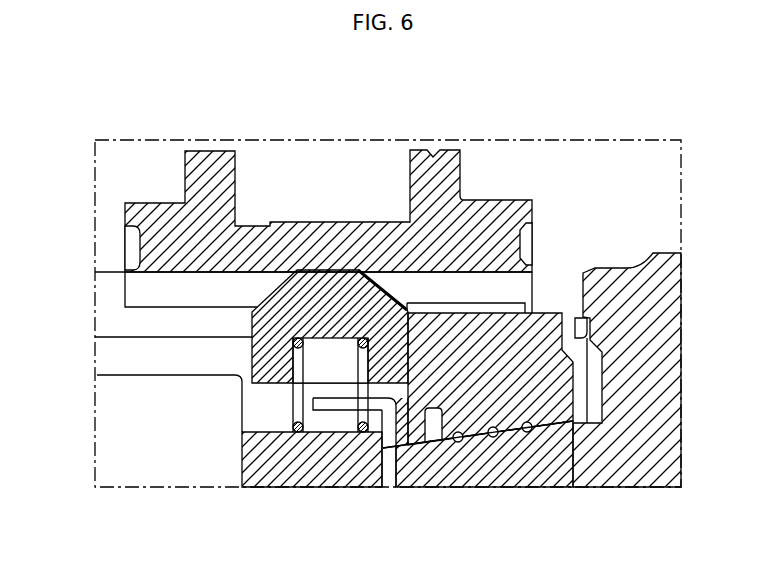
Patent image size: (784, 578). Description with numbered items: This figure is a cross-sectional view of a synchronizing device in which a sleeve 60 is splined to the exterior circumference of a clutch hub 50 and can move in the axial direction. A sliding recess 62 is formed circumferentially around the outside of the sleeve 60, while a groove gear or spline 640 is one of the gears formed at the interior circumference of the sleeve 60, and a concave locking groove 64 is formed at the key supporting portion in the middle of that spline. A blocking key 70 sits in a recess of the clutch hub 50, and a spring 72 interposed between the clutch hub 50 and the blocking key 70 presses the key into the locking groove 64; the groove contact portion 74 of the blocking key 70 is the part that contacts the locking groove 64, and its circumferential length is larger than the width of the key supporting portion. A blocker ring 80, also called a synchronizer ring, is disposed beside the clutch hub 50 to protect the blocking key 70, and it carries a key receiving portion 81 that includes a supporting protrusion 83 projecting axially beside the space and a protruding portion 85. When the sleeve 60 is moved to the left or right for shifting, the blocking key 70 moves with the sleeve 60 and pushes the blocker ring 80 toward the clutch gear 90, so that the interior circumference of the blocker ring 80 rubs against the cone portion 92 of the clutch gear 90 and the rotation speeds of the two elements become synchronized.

The clutch hub 50 is at (112, 353).
The sleeve 60 is at (478, 217).
The sliding recess 62 is at (328, 201).
The locking groove 64 is at (324, 274).
The groove gear or spline 640 is at (498, 290).
The blocking key 70 is at (223, 412).
The spring 72 is at (292, 387).
The groove contact portion 74 is at (392, 286).
The blocker ring 80 is at (558, 397).
The key receiving portion 81 is at (397, 418).
The supporting protrusion 83 is at (343, 392).
The protruding portion 85 is at (548, 317).
The clutch gear 90 is at (668, 358).
The cone portion 92 is at (475, 426).